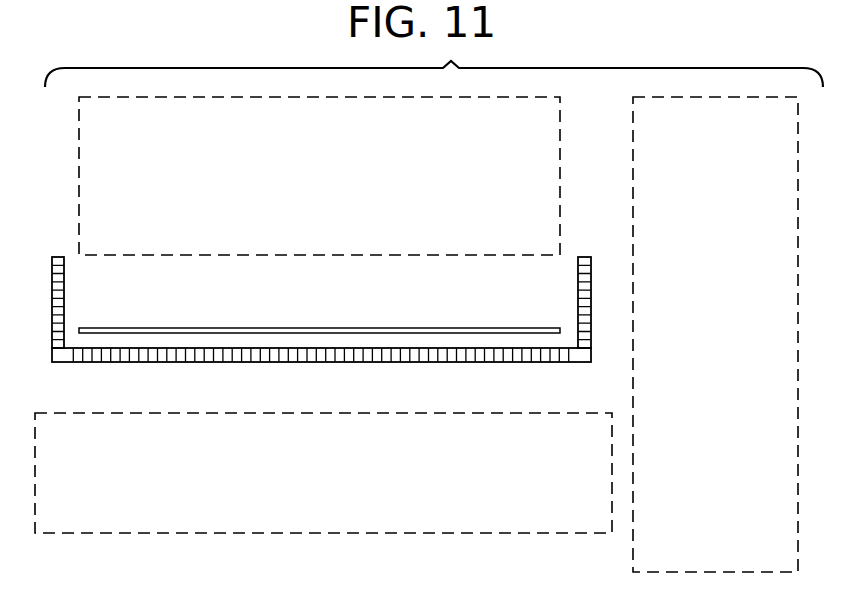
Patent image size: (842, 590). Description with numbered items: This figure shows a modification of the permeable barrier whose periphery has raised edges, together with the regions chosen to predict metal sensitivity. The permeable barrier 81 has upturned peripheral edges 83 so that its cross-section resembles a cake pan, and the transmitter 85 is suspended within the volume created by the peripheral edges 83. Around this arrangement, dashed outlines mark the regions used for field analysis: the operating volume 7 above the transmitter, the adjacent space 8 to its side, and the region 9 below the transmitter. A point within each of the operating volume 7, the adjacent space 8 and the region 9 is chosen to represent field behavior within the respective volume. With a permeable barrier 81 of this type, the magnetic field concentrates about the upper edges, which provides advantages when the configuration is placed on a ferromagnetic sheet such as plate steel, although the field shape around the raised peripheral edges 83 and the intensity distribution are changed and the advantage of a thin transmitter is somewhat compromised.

The operating volume 7 is at (352, 192).
The adjacent space 8 is at (722, 349).
The region below the transmit coil 9 is at (352, 486).
The permeable barrier 81 is at (375, 362).
The upturned peripheral edges 83 is at (52, 290).
The transmitter 85 is at (347, 327).